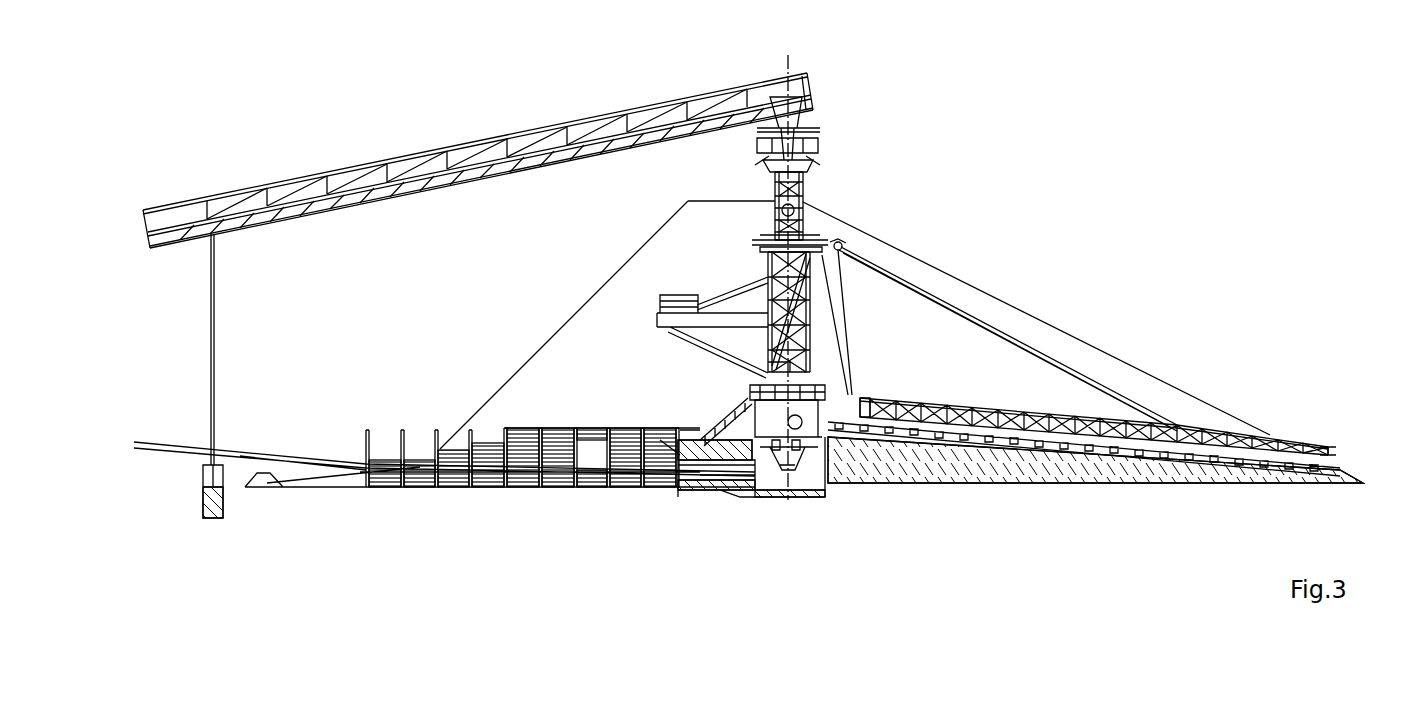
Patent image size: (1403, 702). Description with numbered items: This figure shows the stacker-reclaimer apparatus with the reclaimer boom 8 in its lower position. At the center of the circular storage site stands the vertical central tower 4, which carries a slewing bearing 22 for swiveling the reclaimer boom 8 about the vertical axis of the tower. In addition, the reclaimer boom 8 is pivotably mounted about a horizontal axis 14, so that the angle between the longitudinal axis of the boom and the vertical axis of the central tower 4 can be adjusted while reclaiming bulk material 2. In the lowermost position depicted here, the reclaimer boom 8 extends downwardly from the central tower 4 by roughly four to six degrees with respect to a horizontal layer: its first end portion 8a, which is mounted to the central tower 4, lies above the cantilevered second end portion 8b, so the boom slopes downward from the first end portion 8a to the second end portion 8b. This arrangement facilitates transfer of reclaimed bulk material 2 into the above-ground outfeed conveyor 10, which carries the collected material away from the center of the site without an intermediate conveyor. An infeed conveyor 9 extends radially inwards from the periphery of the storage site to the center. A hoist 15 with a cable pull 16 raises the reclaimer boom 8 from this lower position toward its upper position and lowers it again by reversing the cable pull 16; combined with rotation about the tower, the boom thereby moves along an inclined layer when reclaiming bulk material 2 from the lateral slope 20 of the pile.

The bulk material 2 is at (726, 222).
The central tower 4 is at (805, 188).
The reclaimer boom 8 is at (965, 402).
The first end portion 8a is at (828, 400).
The second end portion 8b is at (1322, 448).
The infeed conveyor 9 is at (650, 105).
The outfeed conveyor 10 is at (167, 455).
The horizontal axis 14 is at (805, 445).
The hoist 15 is at (990, 320).
The cable pull 16 is at (872, 265).
The lateral slope 20 is at (1035, 328).
The slewing bearing 22 is at (770, 455).